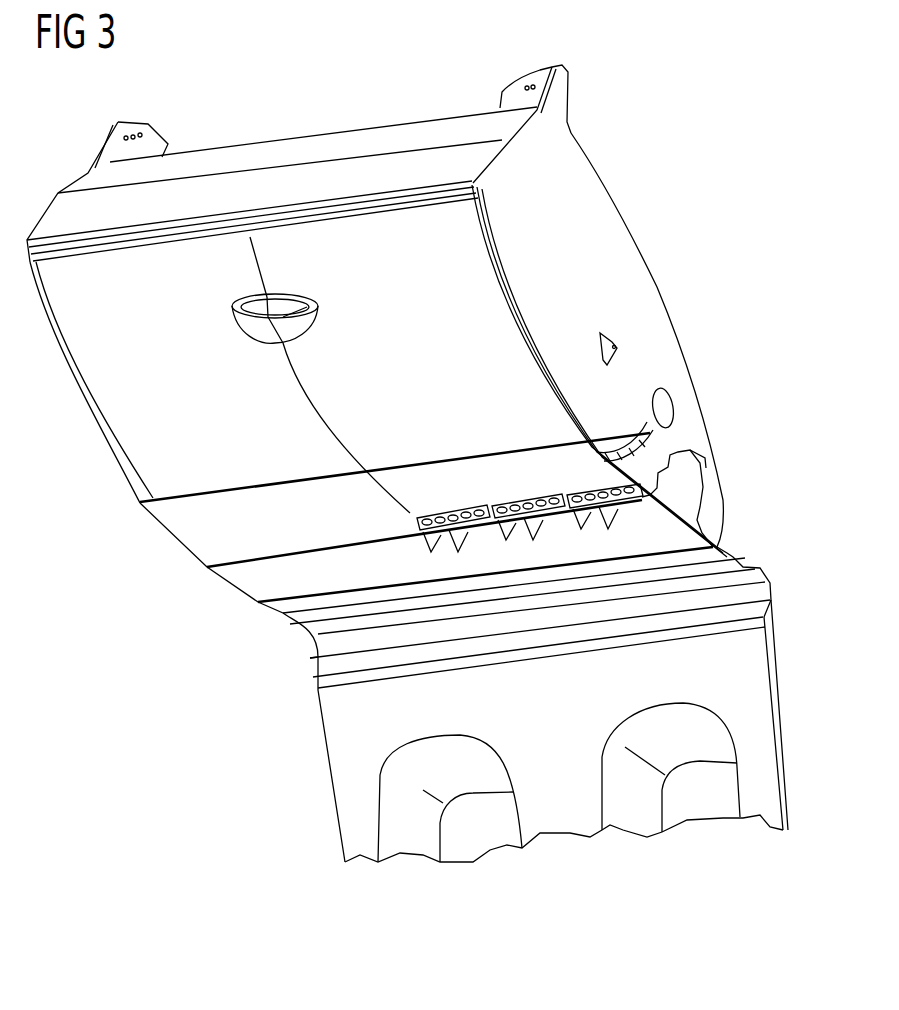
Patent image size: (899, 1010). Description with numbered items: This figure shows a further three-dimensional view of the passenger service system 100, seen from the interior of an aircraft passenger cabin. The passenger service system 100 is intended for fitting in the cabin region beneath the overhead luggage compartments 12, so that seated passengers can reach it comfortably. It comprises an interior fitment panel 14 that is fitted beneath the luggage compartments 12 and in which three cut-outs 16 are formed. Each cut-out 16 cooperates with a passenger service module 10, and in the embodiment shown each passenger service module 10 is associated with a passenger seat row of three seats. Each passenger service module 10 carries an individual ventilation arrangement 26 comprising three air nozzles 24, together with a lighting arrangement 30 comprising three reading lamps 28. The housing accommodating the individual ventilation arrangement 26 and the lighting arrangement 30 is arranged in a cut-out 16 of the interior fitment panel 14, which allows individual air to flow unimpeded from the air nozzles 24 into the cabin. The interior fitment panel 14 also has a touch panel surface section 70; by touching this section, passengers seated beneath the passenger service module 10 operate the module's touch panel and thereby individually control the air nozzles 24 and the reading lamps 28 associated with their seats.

The passenger service module 10 is at (440, 580).
The overhead luggage compartments 12 is at (478, 296).
The interior fitment panel 14 is at (405, 492).
The cut-out 16 is at (470, 513).
The air nozzles 24 is at (523, 543).
The individual ventilation arrangement 26 is at (426, 500).
The reading lamps 28 is at (441, 565).
The lighting arrangement 30 is at (443, 498).
The touch panel surface section 70 is at (405, 505).
The passenger service system 100 is at (738, 498).